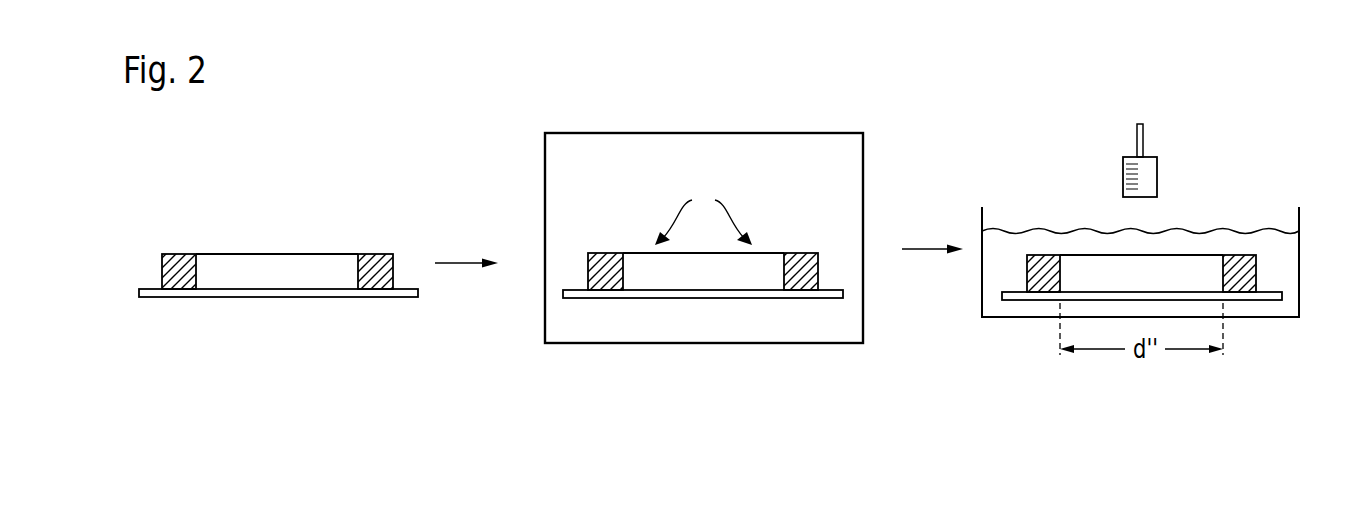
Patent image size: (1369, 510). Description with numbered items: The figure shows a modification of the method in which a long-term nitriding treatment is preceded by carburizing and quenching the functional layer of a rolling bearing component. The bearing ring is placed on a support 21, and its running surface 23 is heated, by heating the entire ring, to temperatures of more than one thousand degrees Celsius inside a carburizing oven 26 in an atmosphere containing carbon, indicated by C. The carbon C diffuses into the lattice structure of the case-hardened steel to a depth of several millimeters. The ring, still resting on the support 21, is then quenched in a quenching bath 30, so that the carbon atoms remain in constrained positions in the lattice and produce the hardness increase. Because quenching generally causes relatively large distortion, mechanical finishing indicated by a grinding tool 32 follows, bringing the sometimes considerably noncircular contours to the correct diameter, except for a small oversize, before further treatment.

The support 21 is at (220, 298).
The running surface 23 is at (198, 263).
The process chamber 26 is at (685, 150).
The quenching bath 30 is at (1023, 238).
The grinding tool 32 is at (1123, 170).
The carbon C is at (703, 216).